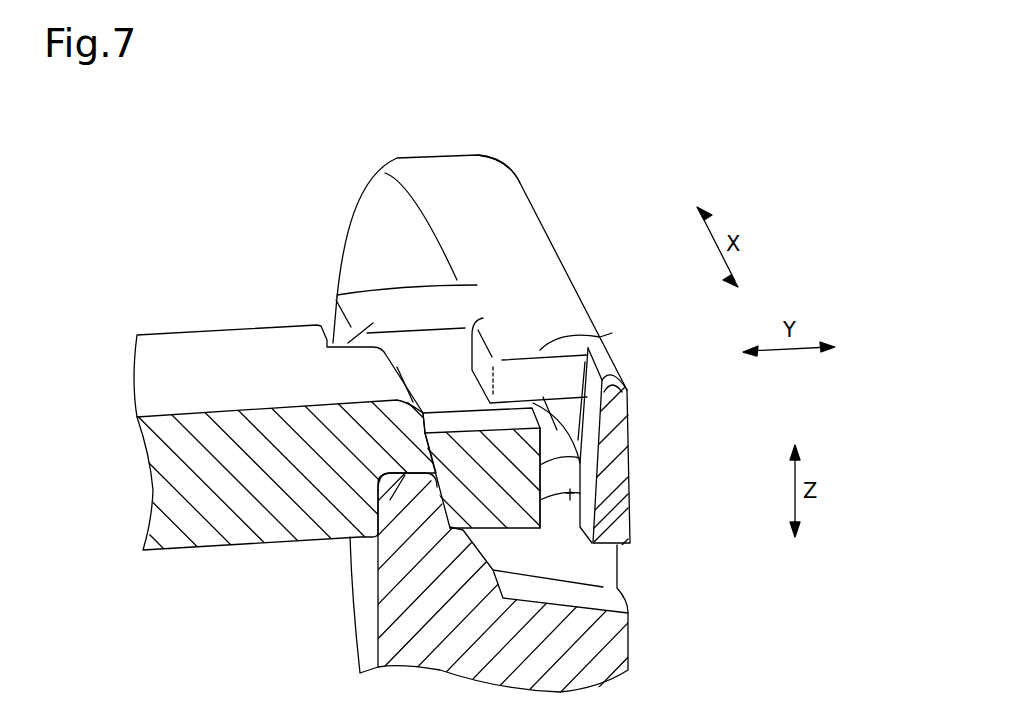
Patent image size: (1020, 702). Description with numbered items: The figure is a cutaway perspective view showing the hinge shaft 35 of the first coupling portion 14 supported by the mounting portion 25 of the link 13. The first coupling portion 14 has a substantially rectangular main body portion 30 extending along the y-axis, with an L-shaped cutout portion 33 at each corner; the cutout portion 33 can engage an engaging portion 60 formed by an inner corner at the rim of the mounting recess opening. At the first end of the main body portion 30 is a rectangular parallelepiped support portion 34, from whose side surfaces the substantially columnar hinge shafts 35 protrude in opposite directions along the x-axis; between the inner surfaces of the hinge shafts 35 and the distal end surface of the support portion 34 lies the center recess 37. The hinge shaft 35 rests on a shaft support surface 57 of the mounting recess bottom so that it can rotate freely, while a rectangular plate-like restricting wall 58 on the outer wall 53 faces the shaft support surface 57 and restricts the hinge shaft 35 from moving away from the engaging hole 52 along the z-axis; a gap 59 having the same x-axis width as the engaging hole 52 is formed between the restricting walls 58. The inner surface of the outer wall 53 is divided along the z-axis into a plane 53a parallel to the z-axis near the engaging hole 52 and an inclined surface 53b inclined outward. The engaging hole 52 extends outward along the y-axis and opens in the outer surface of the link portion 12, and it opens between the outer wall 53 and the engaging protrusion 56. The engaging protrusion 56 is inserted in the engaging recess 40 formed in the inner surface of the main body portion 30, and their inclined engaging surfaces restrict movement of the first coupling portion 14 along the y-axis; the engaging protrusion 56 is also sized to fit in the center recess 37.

The link portion 12 is at (520, 189).
The link 13 is at (514, 166).
The first coupling portion 14 is at (202, 330).
The mounting portion 25 is at (524, 321).
The main body portion 30 is at (270, 327).
The cutout portion 33 is at (331, 335).
The support portion 34 is at (512, 517).
The hinge shaft 35 is at (553, 433).
The center recess 37 is at (582, 462).
The engaging recess 40 is at (418, 473).
The engaging hole 52 is at (587, 562).
The outer wall 53 is at (630, 431).
The plane 53a is at (615, 500).
The inclined surface 53b is at (628, 388).
The engaging protrusion 56 is at (385, 495).
The shaft support surface 57 is at (570, 500).
The restricting wall 58 is at (612, 333).
The gap 59 is at (575, 365).
The engaging portion 60 is at (360, 315).